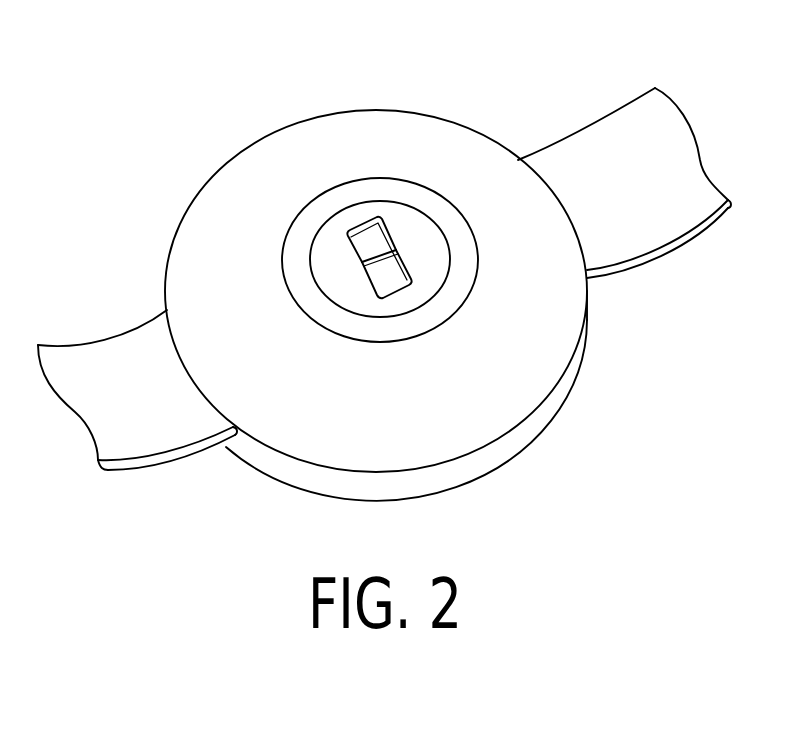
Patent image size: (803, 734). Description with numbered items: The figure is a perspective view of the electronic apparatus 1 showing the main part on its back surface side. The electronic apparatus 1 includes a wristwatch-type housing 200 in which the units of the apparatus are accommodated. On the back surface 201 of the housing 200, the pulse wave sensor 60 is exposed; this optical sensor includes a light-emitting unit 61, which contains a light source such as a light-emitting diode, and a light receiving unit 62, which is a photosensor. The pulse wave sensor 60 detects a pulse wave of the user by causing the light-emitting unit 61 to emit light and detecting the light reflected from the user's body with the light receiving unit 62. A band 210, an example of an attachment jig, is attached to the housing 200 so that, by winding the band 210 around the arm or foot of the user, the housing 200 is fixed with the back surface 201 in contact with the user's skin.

The electronic apparatus 1 is at (450, 80).
The housing 200 is at (198, 198).
The back surface 201 is at (193, 250).
The band 210 is at (100, 342).
The pulse wave sensor 60 is at (350, 222).
The light-emitting unit 61 is at (375, 237).
The light receiving unit 62 is at (398, 272).